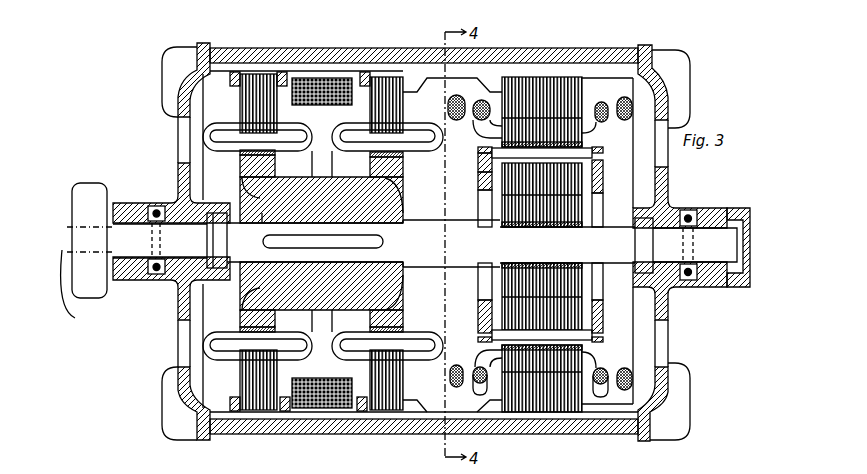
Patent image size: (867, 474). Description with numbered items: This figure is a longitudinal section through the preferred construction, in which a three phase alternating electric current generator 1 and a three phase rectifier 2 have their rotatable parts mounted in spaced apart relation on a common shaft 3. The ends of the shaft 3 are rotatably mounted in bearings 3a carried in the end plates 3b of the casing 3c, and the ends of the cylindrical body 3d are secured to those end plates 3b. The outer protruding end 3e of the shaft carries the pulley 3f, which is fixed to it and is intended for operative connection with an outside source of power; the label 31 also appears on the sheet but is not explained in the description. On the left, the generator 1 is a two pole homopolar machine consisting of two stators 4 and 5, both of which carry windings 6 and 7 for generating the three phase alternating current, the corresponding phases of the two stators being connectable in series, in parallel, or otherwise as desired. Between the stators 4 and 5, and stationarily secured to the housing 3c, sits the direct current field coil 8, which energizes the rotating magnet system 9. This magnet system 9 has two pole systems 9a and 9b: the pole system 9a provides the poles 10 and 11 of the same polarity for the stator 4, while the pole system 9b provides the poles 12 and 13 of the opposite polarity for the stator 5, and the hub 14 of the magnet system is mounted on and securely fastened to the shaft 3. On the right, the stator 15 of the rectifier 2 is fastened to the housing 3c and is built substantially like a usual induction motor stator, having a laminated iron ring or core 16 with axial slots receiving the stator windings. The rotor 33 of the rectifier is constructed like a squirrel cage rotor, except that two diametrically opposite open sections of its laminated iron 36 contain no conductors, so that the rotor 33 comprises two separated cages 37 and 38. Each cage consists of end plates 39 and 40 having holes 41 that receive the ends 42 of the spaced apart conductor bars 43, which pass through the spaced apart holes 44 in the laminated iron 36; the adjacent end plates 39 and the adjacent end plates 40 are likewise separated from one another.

The three phase alternating electric current generator 1 is at (257, 117).
The three phase rectifier 2 is at (568, 105).
The shaft 3 is at (413, 267).
The bearings 3a is at (140, 280).
The end plates 3b is at (176, 306).
The casing 3c is at (533, 434).
The cylindrical body 3d is at (228, 434).
The outer protruding end of the shaft 3e is at (80, 293).
The pulley 3f is at (90, 188).
The stator 4 is at (247, 102).
The stator 5 is at (431, 122).
The winding 6 is at (214, 352).
The winding 7 is at (429, 356).
The direct current field coil 8 is at (307, 380).
The magnet system 9 is at (253, 301).
The pole system 9a is at (253, 192).
The pole system 9b is at (385, 196).
The pole 10 is at (245, 165).
The pole 11 is at (245, 317).
The pole 12 is at (398, 167).
The pole 13 is at (398, 323).
The hub 14 is at (265, 215).
The stator of the rectifier 15 is at (533, 92).
The laminated iron ring or core 16 is at (566, 107).
The base 31 is at (319, 471).
The rotor of the rectifier 33 is at (515, 310).
The laminated iron 36 is at (573, 305).
The cage 37 is at (482, 192).
The cage 38 is at (480, 294).
The end plate 39 is at (480, 183).
The end plate 40 is at (603, 185).
The holes 41 is at (480, 150).
The ends of the conductor bars 42 is at (478, 167).
The conductor bars 43 is at (570, 155).
The holes 44 is at (555, 156).